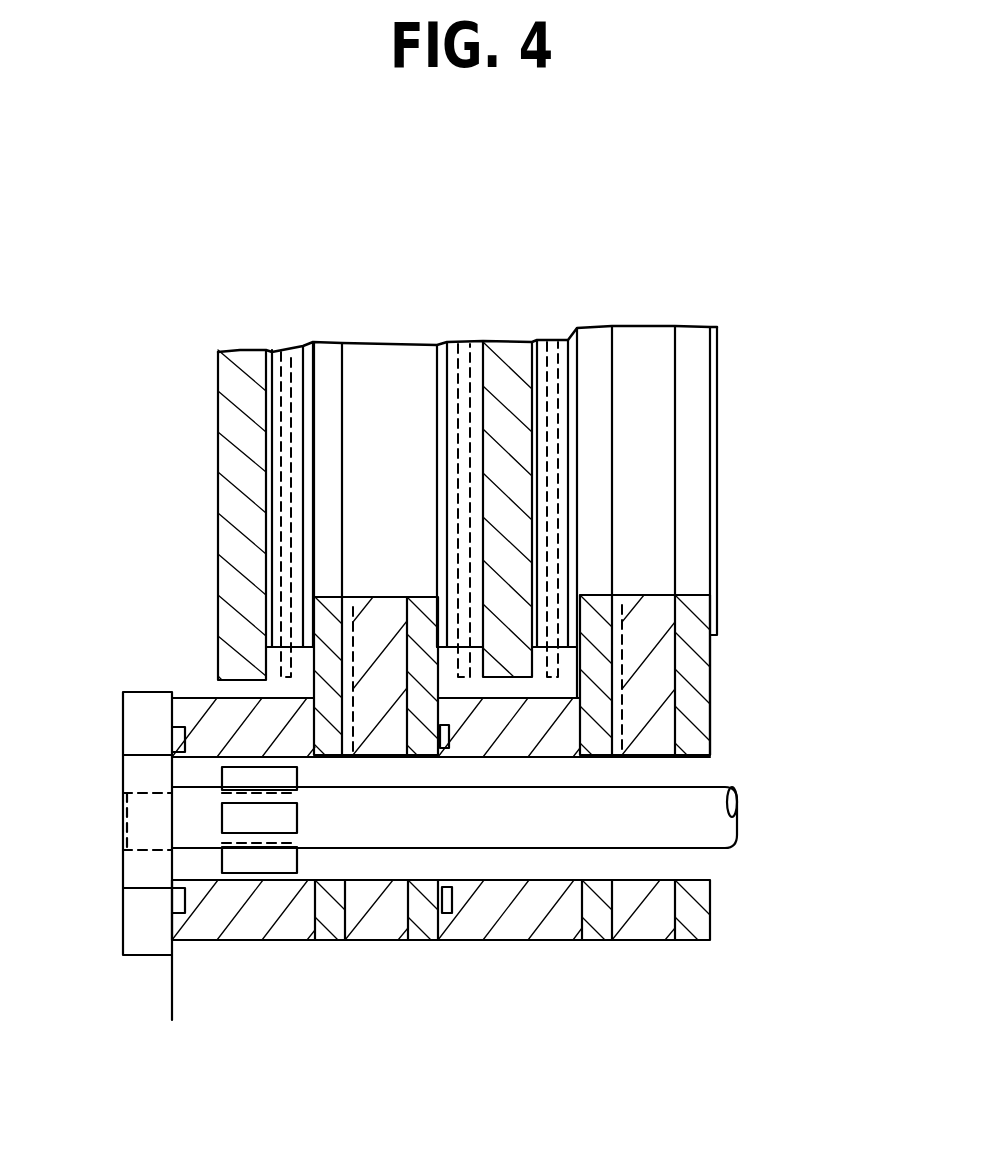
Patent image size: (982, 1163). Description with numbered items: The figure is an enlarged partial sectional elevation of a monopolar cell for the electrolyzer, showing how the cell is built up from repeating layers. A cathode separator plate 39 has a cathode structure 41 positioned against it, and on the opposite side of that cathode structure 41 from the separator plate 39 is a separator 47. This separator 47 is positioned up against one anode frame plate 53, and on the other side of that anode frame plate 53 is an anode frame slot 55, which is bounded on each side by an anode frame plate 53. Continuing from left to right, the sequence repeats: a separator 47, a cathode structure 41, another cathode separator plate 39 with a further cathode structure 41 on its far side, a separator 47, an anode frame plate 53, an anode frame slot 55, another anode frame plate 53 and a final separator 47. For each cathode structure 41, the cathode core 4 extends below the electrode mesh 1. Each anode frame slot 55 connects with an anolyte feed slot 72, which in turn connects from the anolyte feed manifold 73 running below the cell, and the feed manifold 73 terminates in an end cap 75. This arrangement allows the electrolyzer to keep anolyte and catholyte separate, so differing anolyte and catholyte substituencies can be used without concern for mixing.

The electrode mesh 1 is at (272, 583).
The cathode core 4 is at (283, 662).
The cathode separator plate 39 is at (222, 485).
The cathode structure 41 is at (275, 349).
The separator 47 is at (307, 345).
The anode frame plate 53 is at (410, 340).
The anode frame slot 55 is at (405, 505).
The anolyte feed slot 72 is at (618, 680).
The anolyte feed manifold 73 is at (757, 756).
The end cap 75 is at (137, 925).